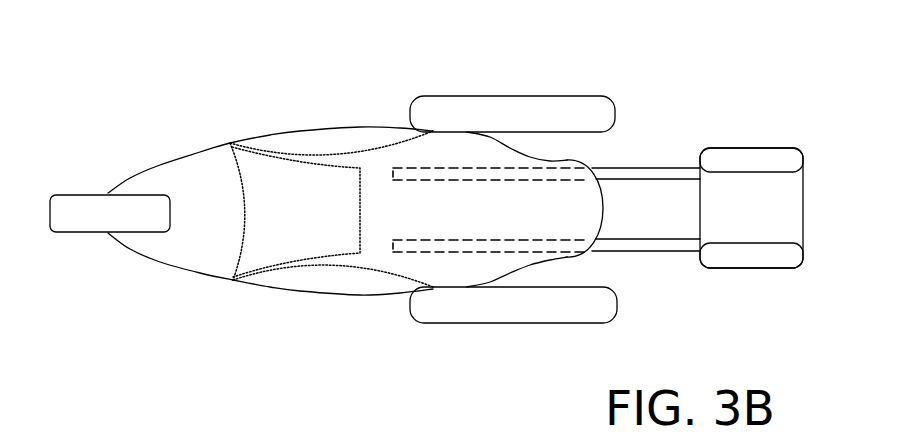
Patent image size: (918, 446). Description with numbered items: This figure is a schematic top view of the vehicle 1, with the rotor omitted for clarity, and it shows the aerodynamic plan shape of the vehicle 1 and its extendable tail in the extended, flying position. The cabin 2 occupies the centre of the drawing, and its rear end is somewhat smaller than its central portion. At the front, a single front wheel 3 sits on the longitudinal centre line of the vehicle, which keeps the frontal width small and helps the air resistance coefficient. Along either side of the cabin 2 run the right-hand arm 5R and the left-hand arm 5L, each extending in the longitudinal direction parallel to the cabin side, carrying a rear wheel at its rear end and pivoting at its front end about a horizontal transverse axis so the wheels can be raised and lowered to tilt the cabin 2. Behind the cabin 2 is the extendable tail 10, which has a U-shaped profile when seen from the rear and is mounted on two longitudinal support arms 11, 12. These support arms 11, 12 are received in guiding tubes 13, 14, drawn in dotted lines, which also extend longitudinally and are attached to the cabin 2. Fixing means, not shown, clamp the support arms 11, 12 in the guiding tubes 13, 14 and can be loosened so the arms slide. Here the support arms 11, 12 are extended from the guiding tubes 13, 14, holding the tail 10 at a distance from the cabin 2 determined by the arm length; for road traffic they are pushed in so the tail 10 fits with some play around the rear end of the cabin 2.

The vehicle 1 is at (199, 109).
The cabin 2 is at (283, 132).
The front wheel 3 is at (80, 232).
The right-hand arm 5R is at (512, 96).
The left-hand arm 5L is at (513, 323).
The extendable tail 10 is at (753, 148).
The support arm 11 is at (665, 165).
The support arm 12 is at (665, 252).
The guiding tube 13 is at (540, 168).
The guiding tube 14 is at (540, 252).